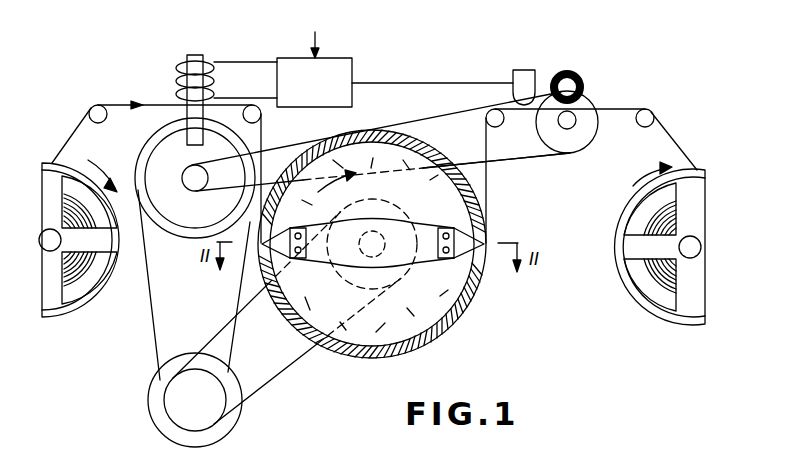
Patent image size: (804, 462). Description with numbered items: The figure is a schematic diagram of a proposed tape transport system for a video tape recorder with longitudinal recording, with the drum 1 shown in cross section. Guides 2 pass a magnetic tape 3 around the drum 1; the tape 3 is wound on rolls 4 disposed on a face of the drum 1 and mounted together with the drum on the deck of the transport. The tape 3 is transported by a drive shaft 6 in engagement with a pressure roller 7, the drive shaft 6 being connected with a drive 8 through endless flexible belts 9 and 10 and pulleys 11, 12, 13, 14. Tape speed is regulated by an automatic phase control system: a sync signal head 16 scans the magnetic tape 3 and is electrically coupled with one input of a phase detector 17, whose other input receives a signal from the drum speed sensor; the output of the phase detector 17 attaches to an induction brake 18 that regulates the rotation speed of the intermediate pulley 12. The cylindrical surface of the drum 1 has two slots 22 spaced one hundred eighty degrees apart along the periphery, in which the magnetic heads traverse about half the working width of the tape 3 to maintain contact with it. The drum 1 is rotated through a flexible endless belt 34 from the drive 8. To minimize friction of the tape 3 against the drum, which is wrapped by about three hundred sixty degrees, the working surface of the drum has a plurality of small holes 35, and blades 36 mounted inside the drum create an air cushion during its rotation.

The drum 1 is at (384, 253).
The guides 2 is at (652, 111).
The magnetic tape 3 is at (487, 182).
The rolls 4 is at (60, 308).
The drive shaft 6 is at (577, 124).
The pressure roller 7 is at (583, 86).
The drive 8 is at (155, 413).
The endless flexible belt 9 is at (147, 300).
The endless flexible belt 10 is at (508, 160).
The pulley 11 is at (212, 428).
The intermediate pulley 12 is at (153, 140).
The pulley 13 is at (189, 184).
The pulley 14 is at (577, 148).
The sync signal head 16 is at (513, 70).
The phase detector 17 is at (285, 58).
The induction brake 18 is at (183, 66).
The slots 22 is at (487, 252).
The flexible endless belt 34 is at (280, 378).
The small holes 35 is at (460, 330).
The blades 36 is at (435, 341).